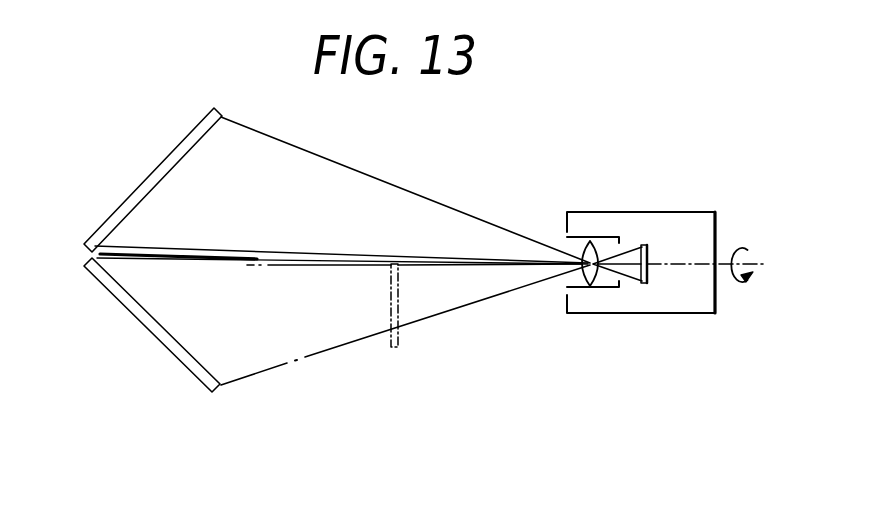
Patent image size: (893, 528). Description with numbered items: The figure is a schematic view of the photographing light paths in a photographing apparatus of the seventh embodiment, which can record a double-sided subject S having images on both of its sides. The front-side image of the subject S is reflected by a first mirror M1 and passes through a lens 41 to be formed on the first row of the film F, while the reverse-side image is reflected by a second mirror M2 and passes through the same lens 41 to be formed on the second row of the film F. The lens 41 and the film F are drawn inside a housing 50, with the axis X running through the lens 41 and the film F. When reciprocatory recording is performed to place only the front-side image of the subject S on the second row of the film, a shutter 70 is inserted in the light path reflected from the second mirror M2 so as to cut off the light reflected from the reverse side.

The first mirror M1 is at (188, 140).
The second mirror M2 is at (212, 387).
The subject S is at (143, 257).
The shutter 70 is at (399, 343).
The lens 41 is at (588, 240).
The housing 50 is at (717, 221).
The film F is at (648, 275).
The rotation axis X is at (518, 265).